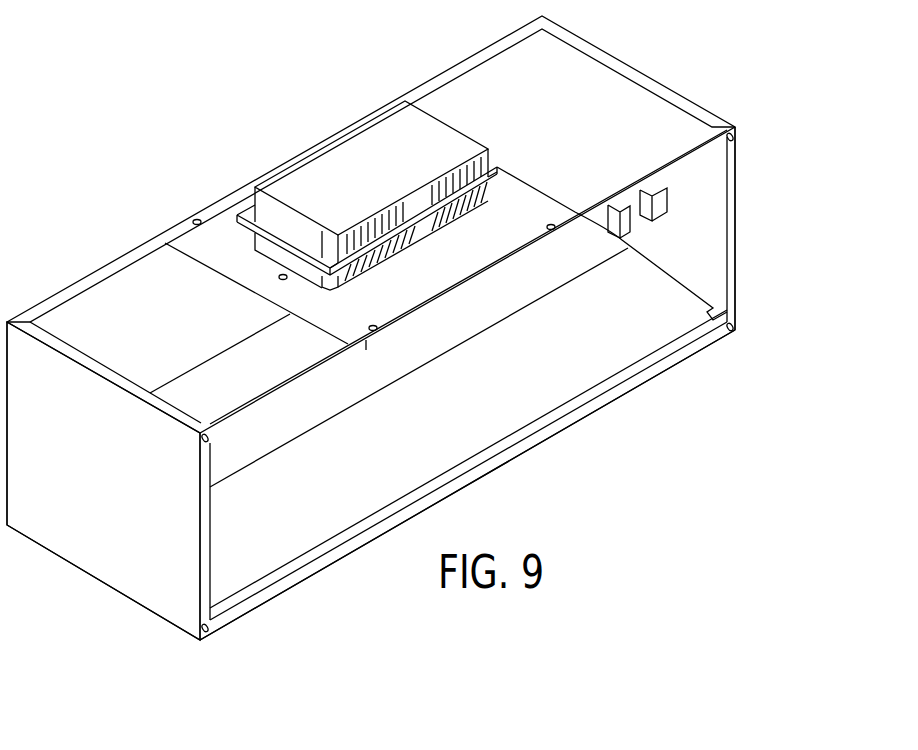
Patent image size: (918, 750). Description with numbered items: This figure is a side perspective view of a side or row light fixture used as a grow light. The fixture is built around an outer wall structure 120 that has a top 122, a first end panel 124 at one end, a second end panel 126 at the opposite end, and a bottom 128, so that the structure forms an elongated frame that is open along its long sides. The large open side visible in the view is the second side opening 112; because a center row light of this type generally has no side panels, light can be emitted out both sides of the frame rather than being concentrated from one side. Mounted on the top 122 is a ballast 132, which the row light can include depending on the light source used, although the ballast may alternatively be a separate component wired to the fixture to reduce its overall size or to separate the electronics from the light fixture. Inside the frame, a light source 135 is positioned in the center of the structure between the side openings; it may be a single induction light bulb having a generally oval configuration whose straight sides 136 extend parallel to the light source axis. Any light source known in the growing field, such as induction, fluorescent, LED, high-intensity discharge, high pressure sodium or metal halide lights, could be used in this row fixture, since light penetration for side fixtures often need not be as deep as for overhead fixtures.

The outer wall structure 120 is at (145, 217).
The top 122 is at (486, 83).
The first end panel 124 is at (665, 83).
The second end panel 126 is at (102, 585).
The bottom 128 is at (346, 555).
The ballast 132 is at (323, 170).
The light source 135 is at (489, 337).
The straight sides 136 is at (376, 383).
The second side opening 112 is at (712, 227).